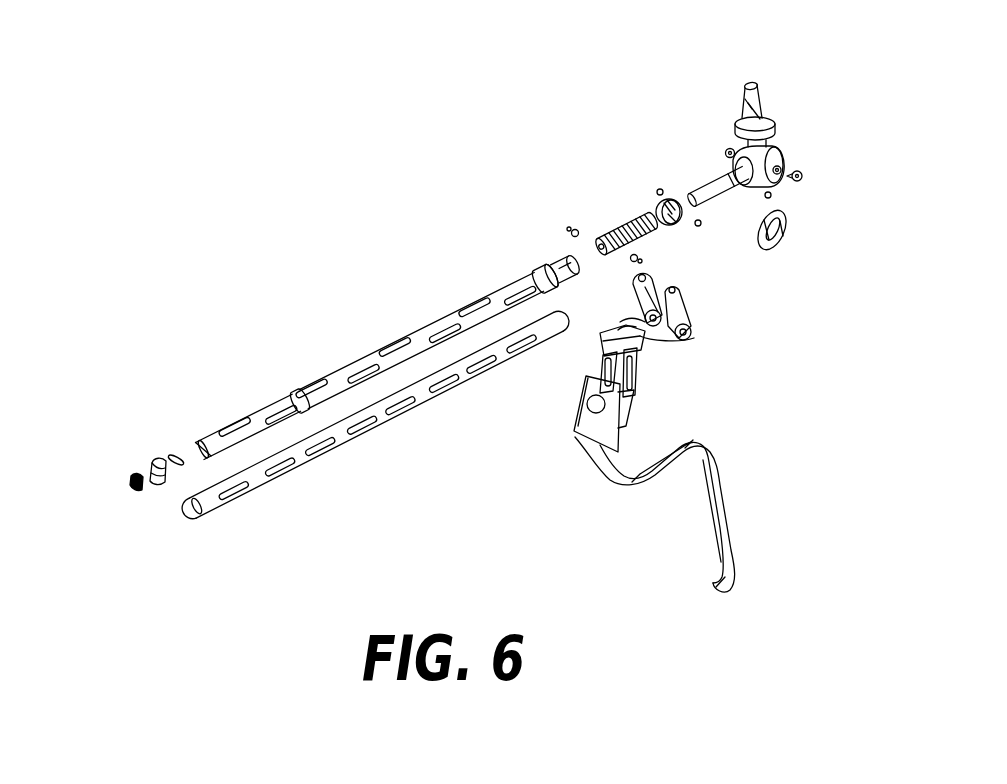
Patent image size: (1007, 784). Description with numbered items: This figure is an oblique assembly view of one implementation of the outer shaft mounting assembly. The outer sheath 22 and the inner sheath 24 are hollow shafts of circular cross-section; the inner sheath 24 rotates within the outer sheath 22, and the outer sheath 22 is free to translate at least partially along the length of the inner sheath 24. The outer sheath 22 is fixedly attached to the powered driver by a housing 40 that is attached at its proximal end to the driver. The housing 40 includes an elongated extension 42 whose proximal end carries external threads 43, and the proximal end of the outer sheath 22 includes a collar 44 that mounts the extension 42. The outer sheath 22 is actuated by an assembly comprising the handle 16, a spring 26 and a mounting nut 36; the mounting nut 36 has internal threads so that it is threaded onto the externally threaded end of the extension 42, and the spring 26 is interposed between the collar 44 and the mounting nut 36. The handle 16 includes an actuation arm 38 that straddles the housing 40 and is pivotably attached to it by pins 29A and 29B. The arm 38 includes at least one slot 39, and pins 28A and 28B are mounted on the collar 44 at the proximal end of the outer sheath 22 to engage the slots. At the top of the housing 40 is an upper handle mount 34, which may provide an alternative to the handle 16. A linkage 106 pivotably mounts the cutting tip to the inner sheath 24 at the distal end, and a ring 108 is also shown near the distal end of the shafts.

The handle 16 is at (613, 478).
The outer sheath 22 is at (419, 372).
The inner sheath 24 is at (248, 491).
The spring 26 is at (620, 223).
The pin 28A is at (569, 227).
The pin 28B is at (642, 260).
The pin 29A is at (771, 196).
The pin 29B is at (727, 147).
The upper handle mount 34 is at (757, 108).
The mounting nut 36 is at (684, 226).
The actuation arm 38 is at (650, 345).
The slot 39 is at (638, 377).
The housing 40 is at (784, 155).
The elongated extension 42 is at (708, 176).
The external threads 43 is at (734, 190).
The collar 44 is at (556, 276).
The linkage 106 is at (155, 486).
The ring 108 is at (180, 447).